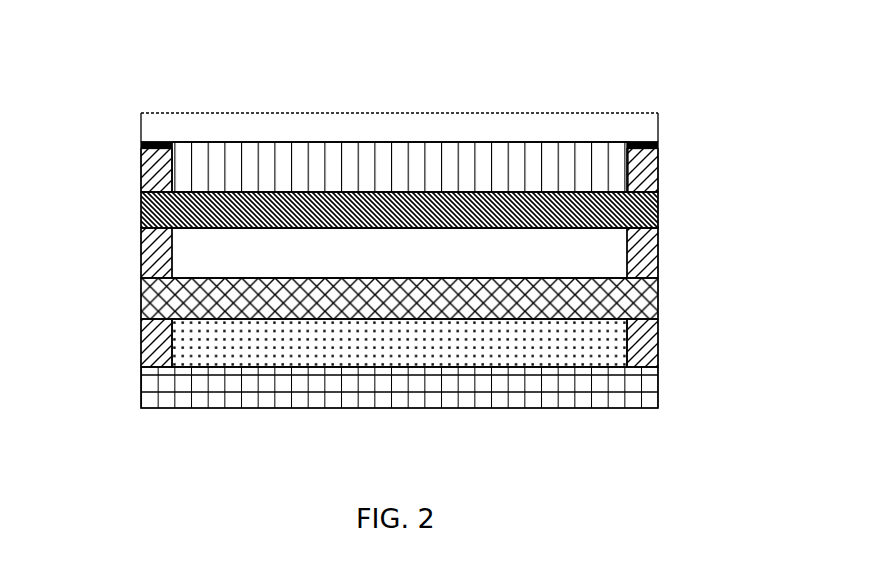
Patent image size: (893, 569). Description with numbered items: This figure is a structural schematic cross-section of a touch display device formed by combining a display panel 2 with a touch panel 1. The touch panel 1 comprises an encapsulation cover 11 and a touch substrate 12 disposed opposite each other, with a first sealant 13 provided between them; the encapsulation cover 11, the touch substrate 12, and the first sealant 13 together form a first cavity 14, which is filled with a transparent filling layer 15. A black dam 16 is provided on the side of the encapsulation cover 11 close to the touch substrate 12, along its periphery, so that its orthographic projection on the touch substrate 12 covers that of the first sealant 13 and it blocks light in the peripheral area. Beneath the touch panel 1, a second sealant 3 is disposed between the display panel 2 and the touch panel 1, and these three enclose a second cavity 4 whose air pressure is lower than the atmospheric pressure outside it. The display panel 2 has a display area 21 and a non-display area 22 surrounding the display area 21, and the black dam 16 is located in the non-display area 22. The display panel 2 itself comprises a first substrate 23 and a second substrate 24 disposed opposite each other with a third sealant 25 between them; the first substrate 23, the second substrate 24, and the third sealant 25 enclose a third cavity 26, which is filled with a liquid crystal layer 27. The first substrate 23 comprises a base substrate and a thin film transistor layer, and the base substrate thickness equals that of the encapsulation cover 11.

The touch panel 1 is at (110, 105).
The display panel 2 is at (110, 282).
The second sealant 3 is at (157, 253).
The second cavity 4 is at (606, 260).
The encapsulation cover 11 is at (244, 128).
The touch substrate 12 is at (658, 212).
The first sealant 13 is at (658, 176).
The first cavity 14 is at (363, 127).
The transparent filling layer 15 is at (487, 150).
The black dam 16 is at (658, 147).
The display area 21 is at (615, 28).
The non-display area 22 is at (653, 28).
The first substrate 23 is at (658, 396).
The second substrate 24 is at (658, 310).
The third sealant 25 is at (658, 350).
The third cavity 26 is at (487, 382).
The liquid crystal layer 27 is at (243, 350).